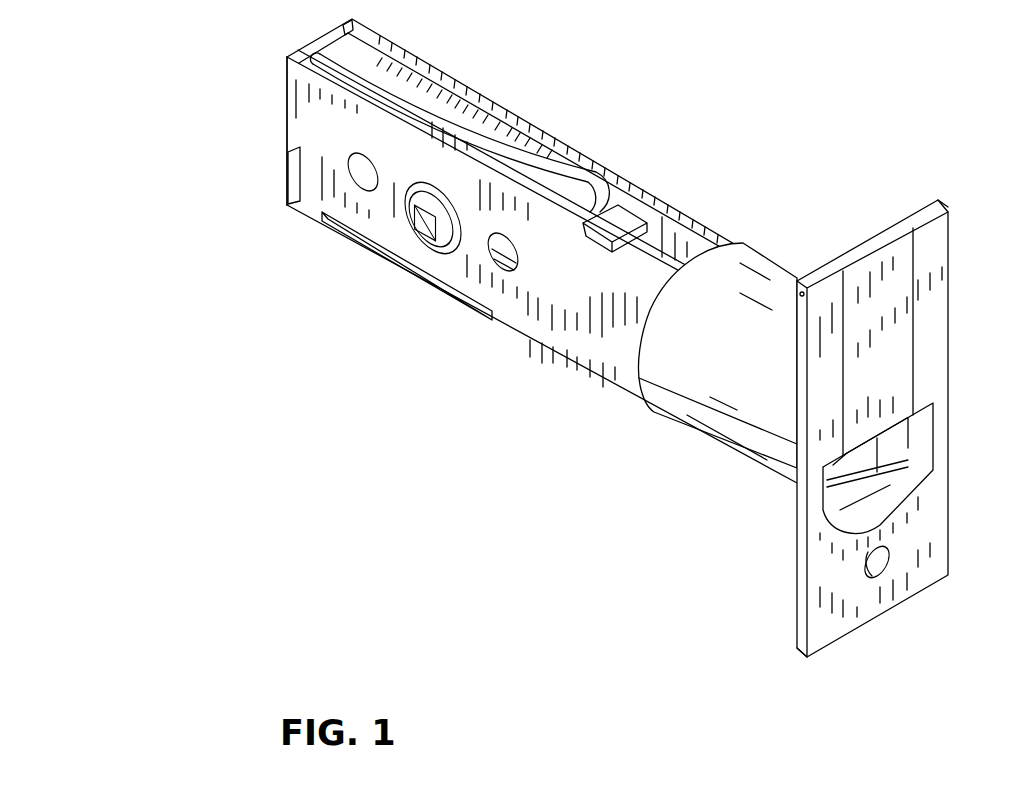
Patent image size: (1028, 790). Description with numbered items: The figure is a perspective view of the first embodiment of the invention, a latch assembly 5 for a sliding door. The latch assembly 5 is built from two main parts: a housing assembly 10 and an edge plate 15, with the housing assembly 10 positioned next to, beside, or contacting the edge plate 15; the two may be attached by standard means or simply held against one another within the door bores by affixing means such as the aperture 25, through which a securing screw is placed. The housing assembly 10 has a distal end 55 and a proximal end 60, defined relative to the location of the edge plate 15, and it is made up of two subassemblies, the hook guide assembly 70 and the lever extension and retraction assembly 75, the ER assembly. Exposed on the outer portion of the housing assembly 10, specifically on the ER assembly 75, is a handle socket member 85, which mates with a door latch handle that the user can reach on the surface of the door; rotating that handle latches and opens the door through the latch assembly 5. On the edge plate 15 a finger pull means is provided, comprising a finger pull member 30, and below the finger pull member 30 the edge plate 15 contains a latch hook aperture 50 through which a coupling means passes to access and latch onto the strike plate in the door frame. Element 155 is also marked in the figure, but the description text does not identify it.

The latch assembly 5 is at (547, 369).
The housing assembly 10 is at (489, 321).
The edge plate 15 is at (911, 428).
The aperture 25 is at (883, 567).
The finger pull member 30 is at (900, 352).
The latch hook aperture 50 is at (898, 500).
The distal end 55 is at (247, 112).
The proximal end 60 is at (897, 458).
The hook guide assembly 70 is at (782, 538).
The lever extension and retraction assembly 75 is at (431, 324).
The handle socket member 85 is at (418, 200).
The spring rail 155 is at (530, 152).